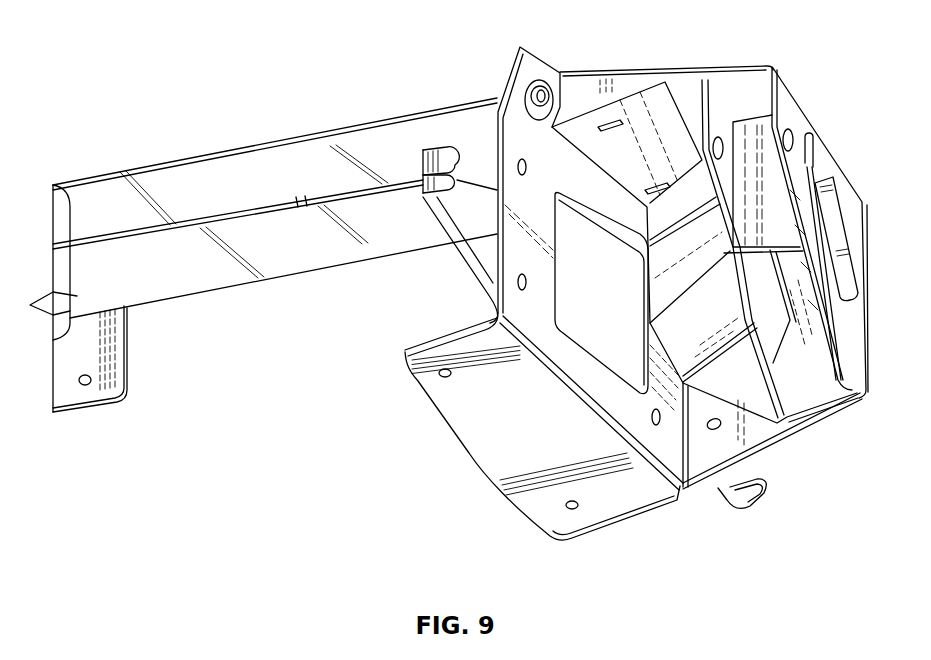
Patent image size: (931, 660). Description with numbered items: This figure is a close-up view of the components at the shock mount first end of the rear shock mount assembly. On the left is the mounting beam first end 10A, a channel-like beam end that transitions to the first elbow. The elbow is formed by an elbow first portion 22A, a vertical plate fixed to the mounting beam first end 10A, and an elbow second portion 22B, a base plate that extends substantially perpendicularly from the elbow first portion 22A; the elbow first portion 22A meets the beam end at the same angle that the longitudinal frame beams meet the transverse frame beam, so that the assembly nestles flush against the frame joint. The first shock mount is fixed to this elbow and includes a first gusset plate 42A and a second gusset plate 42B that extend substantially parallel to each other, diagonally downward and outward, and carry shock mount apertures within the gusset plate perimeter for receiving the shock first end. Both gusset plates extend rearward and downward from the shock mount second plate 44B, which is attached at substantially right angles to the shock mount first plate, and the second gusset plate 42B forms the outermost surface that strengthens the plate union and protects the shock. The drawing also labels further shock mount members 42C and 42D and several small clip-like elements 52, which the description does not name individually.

The mounting beam first end 10A is at (407, 115).
The clip 52 is at (490, 157).
The elbow first portion 22A is at (532, 62).
The elbow second portion 22B is at (485, 450).
The first gusset plate 42A is at (718, 92).
The second gusset plate 42B is at (782, 103).
The frame inclined plate 42C is at (770, 293).
The frame bottom plate 42D is at (730, 387).
The shock mount second plate 44B is at (757, 440).